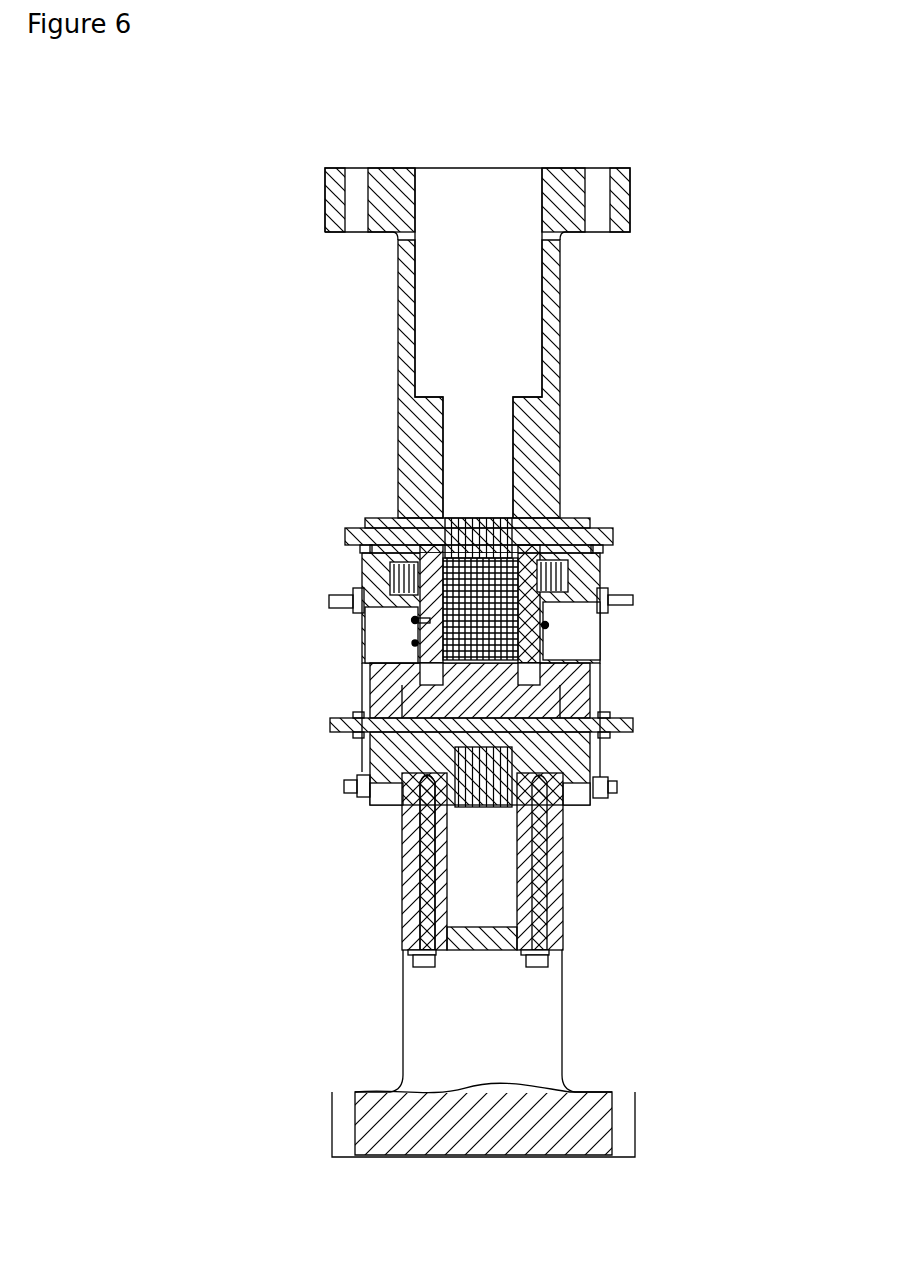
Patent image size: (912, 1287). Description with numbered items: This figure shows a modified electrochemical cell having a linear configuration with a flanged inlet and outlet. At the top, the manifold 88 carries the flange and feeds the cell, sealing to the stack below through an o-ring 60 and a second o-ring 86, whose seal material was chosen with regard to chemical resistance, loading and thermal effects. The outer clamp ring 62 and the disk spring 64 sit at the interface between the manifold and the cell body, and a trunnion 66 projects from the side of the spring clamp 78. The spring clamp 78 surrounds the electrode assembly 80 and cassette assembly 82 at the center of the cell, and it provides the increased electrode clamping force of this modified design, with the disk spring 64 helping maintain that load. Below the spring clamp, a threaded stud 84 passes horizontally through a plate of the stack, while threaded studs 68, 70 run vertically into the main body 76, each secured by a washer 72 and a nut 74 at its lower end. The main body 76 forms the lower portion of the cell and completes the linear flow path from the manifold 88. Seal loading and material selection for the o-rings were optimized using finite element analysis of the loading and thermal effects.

The o-ring 60 is at (385, 512).
The outer clamp ring 62 is at (380, 518).
The disk spring 64 is at (363, 520).
The trunnion 66 is at (383, 563).
The threaded stud 68 is at (349, 775).
The threaded stud 70 is at (414, 838).
The washer 72 is at (407, 949).
The nut 74 is at (409, 964).
The main body 76 is at (547, 810).
The spring clamp 78 is at (602, 565).
The electrode assembly 80 is at (545, 625).
The cassette assembly 82 is at (590, 525).
The threaded stud 84 is at (633, 722).
The o-ring 86 is at (520, 513).
The manifold 88 is at (630, 197).